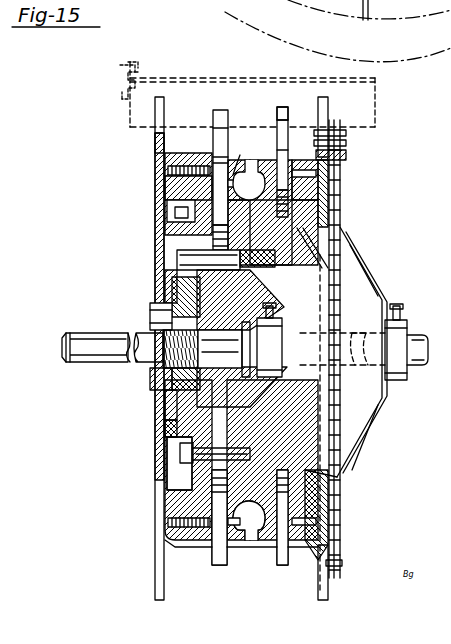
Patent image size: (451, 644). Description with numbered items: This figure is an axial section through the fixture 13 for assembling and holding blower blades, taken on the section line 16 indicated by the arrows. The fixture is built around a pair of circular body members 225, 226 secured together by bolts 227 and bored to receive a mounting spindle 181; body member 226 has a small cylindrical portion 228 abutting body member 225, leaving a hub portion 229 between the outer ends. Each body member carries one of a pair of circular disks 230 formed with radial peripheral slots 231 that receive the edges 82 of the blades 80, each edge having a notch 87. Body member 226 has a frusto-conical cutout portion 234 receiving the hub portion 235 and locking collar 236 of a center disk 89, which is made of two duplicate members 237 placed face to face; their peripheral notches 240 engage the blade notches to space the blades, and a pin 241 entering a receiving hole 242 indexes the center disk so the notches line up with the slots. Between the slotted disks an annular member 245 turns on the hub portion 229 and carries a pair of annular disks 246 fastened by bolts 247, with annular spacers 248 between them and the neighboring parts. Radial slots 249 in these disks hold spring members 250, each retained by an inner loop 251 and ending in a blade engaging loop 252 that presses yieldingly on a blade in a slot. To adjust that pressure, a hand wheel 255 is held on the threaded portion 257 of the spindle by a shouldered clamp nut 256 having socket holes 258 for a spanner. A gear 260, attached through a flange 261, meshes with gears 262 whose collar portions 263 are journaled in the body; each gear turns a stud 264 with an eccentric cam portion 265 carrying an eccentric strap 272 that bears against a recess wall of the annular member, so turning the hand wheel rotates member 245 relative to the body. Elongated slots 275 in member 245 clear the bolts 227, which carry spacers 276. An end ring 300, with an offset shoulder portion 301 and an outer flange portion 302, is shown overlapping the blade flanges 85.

The fixture 13 is at (70, 212).
The section line 16 is at (206, 65).
The blade 80 is at (372, 96).
The blade edge 82 is at (150, 133).
The flange 85 is at (142, 73).
The notch 87 is at (338, 128).
The center disk 89 is at (352, 188).
The mounting spindle 181 is at (90, 340).
The body member 225 is at (168, 176).
The body member 226 is at (328, 507).
The bolts 227 is at (165, 490).
The cylindrical portion 228 is at (172, 380).
The hub portion 229 is at (323, 490).
The circular disks 230 is at (163, 150).
The slots 231 is at (155, 112).
The frusto-conical cutout portion 234 is at (337, 213).
The hub portion 235 is at (360, 266).
The locking collar 236 is at (413, 400).
The duplicate members 237 is at (340, 163).
The peripheral notches 240 is at (335, 125).
The pin 241 is at (346, 143).
The receiving hole 242 is at (346, 135).
The annular member 245 is at (270, 415).
The annular disks 246 is at (195, 165).
The bolts 247 is at (252, 172).
The annular spacers 248 is at (240, 155).
The radial slots 249 is at (241, 494).
The spring member 250 is at (220, 145).
The loop 251 is at (285, 143).
The blade engaging loop 252 is at (283, 112).
The hand wheel 255 is at (165, 262).
The clamp nut 256 is at (168, 330).
The threaded portion 257 is at (150, 364).
The socket holes 258 is at (166, 308).
The gear 260 is at (165, 450).
The flange 261 is at (160, 425).
The gears 262 is at (167, 215).
The collar portions 263 is at (175, 232).
The stud 264 is at (172, 280).
The eccentric cam portion 265 is at (305, 422).
The eccentric strap 272 is at (262, 317).
The elongated slots 275 is at (172, 520).
The spacers 276 is at (165, 462).
The end ring 300 is at (120, 77).
The offset shoulder portion 301 is at (120, 89).
The outer flange portion 302 is at (128, 62).